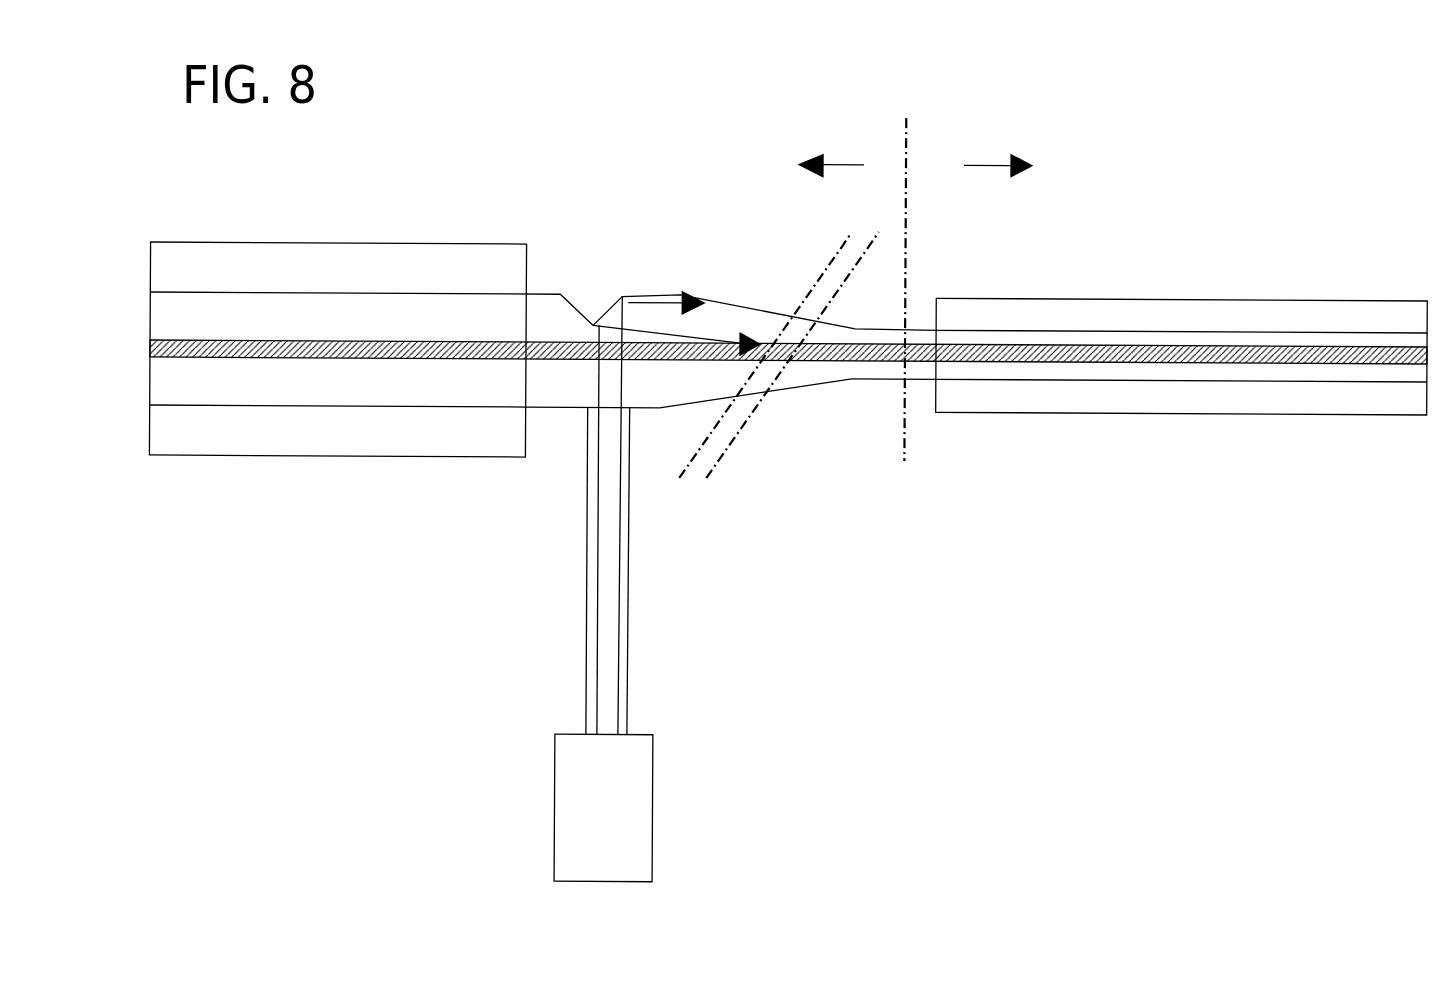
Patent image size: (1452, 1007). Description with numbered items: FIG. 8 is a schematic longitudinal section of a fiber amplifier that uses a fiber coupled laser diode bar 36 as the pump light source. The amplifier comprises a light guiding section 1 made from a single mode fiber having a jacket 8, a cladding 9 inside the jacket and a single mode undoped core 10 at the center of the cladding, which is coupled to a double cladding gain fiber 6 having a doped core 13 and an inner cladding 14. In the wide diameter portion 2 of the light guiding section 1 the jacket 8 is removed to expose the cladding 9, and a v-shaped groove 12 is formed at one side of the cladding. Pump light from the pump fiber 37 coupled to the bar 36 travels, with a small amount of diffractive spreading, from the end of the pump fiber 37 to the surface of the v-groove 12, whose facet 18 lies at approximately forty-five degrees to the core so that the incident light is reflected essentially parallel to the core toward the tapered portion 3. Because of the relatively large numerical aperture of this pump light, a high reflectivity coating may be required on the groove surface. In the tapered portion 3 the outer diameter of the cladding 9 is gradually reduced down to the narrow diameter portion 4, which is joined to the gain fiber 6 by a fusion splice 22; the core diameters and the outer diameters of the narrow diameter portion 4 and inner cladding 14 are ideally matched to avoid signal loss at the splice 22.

The light guiding section 1 is at (844, 169).
The wide diameter portion 2 is at (552, 380).
The tapered portion 3 is at (690, 392).
The narrow diameter portion 4 is at (882, 368).
The double cladding gain fiber 6 is at (979, 169).
The jacket 8 is at (332, 260).
The cladding 9 is at (412, 310).
The core 10 is at (458, 358).
The v-shaped groove 12 is at (614, 255).
The doped core 13 is at (998, 351).
The inner cladding 14 is at (1040, 333).
The facet 18 is at (609, 309).
The fusion splice 22 is at (907, 383).
The fiber coupled laser diode bar 36 is at (603, 800).
The pump fiber 37 is at (605, 570).